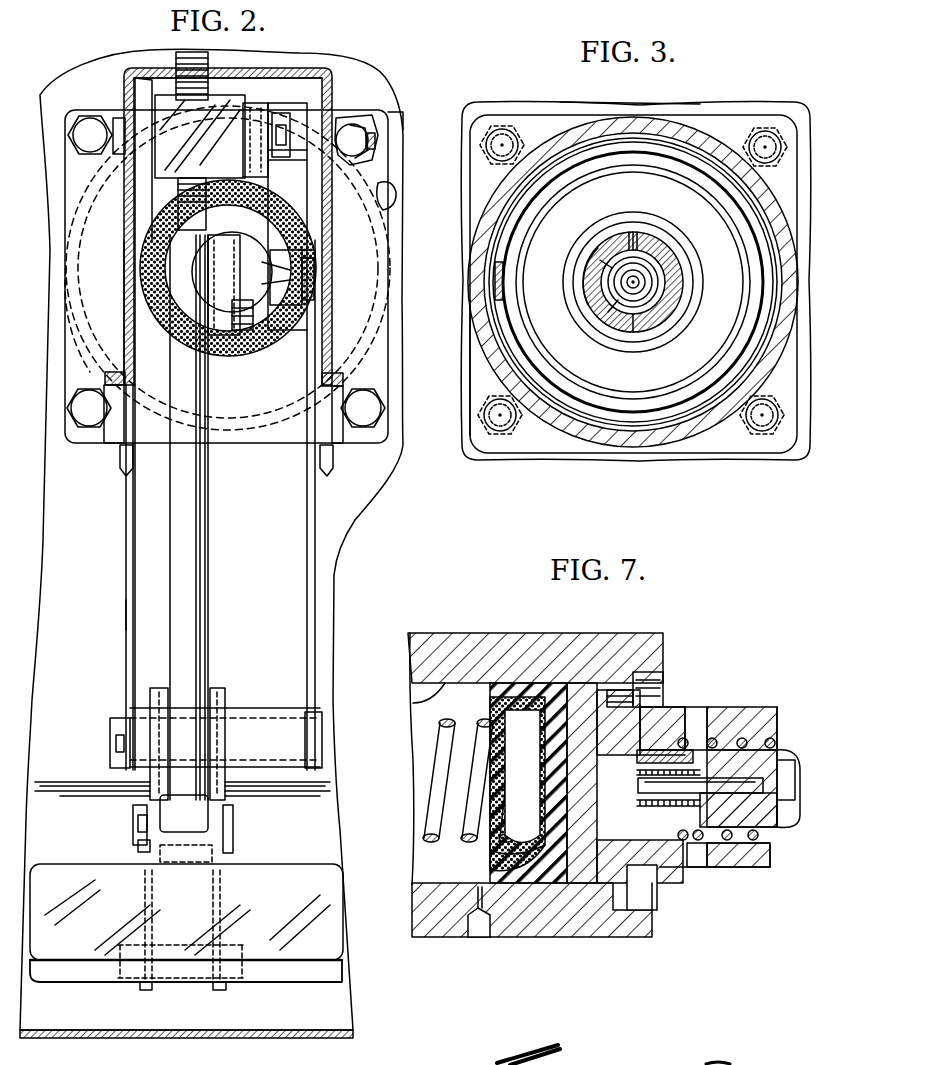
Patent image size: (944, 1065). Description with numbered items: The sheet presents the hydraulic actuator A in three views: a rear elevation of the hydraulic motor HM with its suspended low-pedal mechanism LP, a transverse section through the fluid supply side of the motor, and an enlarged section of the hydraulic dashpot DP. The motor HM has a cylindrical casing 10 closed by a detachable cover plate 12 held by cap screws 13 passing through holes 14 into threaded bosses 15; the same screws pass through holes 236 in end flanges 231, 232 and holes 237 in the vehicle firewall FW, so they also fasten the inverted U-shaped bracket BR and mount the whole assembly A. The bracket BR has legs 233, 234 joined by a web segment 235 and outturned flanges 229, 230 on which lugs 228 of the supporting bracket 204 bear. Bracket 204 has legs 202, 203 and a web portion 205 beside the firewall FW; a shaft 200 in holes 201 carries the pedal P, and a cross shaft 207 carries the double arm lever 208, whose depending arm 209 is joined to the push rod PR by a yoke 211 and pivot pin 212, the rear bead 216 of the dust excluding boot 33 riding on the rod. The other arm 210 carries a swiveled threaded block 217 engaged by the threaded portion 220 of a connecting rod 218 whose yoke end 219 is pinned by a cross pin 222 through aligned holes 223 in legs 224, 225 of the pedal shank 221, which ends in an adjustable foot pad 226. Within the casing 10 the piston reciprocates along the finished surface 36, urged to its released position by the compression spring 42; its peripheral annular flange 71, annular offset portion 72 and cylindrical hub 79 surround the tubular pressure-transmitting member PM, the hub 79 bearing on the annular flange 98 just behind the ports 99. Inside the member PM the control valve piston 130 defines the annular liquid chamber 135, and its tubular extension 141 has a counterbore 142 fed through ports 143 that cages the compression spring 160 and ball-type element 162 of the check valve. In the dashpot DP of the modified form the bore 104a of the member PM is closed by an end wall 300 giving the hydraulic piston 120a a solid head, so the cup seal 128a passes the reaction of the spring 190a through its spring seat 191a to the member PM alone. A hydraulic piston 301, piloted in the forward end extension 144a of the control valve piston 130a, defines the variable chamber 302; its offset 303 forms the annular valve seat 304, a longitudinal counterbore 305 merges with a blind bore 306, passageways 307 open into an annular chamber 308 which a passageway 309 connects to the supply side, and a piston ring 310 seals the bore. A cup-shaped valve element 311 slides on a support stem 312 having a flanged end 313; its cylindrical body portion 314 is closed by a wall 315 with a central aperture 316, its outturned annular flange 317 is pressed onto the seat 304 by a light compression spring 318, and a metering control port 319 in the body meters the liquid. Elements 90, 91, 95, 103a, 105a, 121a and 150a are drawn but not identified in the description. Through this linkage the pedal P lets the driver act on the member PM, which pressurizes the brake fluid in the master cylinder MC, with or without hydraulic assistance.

In FIG. 2, the cylindrical casing 10 is at (384, 220).
In FIG. 3, the cylindrical casing 10 is at (710, 137).
In FIG. 2, the detachable cover plate 12 is at (397, 197).
In FIG. 2, the cap screws 13 is at (90, 127).
In FIG. 3, the cap screws 13 is at (478, 163).
In FIG. 3, the holes 14 is at (490, 142).
In FIG. 2, the threaded bosses 15 is at (72, 440).
In FIG. 3, the threaded bosses 15 is at (488, 118).
In FIG. 2, the dust excluding boot 33 is at (163, 330).
In FIG. 3, the finished surface 36 is at (490, 347).
In FIG. 3, the compression spring 42 is at (495, 280).
In FIG. 3, the peripheral annular flange 71 is at (583, 145).
In FIG. 3, the annular offset portion 72 is at (697, 375).
In FIG. 3, the cylindrical hub 79 is at (658, 222).
In FIG. 7, the mounting block 90 is at (483, 633).
In FIG. 7, the recess 91 is at (414, 703).
In FIG. 7, the pin 95 is at (478, 938).
In FIG. 3, the annular flange 98 is at (655, 275).
In FIG. 3, the ports 99 is at (632, 232).
In FIG. 7, the body 103a is at (738, 810).
In FIG. 7, the bore 104a is at (650, 740).
In FIG. 7, the pad 105a is at (697, 763).
In FIG. 7, the hydraulic piston 120a is at (768, 870).
In FIG. 7, the base plate 121a is at (423, 868).
In FIG. 7, the cup seal 128a is at (527, 687).
In FIG. 3, the control valve piston 130 is at (646, 282).
In FIG. 7, the control valve piston 130a is at (788, 837).
In FIG. 3, the annular liquid chamber 135 is at (600, 278).
In FIG. 3, the tubular extension 141 is at (648, 290).
In FIG. 3, the counterbore 142 is at (662, 265).
In FIG. 3, the ports 143 is at (620, 320).
In FIG. 7, the forward end extension 144a is at (658, 830).
In FIG. 7, the cover 150a is at (770, 707).
In FIG. 3, the compression spring 160 is at (620, 293).
In FIG. 3, the ball-type element 162 is at (623, 313).
In FIG. 7, the spring 190a is at (440, 725).
In FIG. 7, the spring seat 191a is at (503, 846).
In FIG. 2, the shaft 200 is at (112, 723).
In FIG. 2, the holes 201 is at (128, 713).
In FIG. 2, the leg 202 is at (126, 565).
In FIG. 2, the leg 203 is at (307, 555).
In FIG. 2, the supporting bracket 204 is at (117, 613).
In FIG. 2, the web portion 205 is at (148, 512).
In FIG. 2, the cross shaft 207 is at (290, 113).
In FIG. 2, the double arm lever 208 is at (253, 208).
In FIG. 2, the depending arm 209 is at (253, 240).
In FIG. 2, the arm 210 is at (257, 110).
In FIG. 2, the yoke 211 is at (230, 335).
In FIG. 2, the pivot pin 212 is at (303, 290).
In FIG. 2, the rear bead 216 is at (247, 338).
In FIG. 2, the swiveled threaded block 217 is at (163, 173).
In FIG. 2, the connecting rod 218 is at (200, 528).
In FIG. 2, the yoke end 219 is at (196, 822).
In FIG. 2, the threaded portion 220 is at (208, 90).
In FIG. 2, the pedal shank 221 is at (210, 690).
In FIG. 2, the cross pin 222 is at (137, 822).
In FIG. 2, the aligned holes 223 is at (138, 797).
In FIG. 2, the leg 224 is at (140, 850).
In FIG. 2, the leg 225 is at (223, 857).
In FIG. 2, the foot pad 226 is at (80, 950).
In FIG. 2, the lug 228 is at (120, 460).
In FIG. 2, the outturned flange 229 is at (117, 372).
In FIG. 2, the outturned flange 230 is at (329, 373).
In FIG. 2, the end flange 231 is at (87, 113).
In FIG. 2, the end flange 232 is at (392, 117).
In FIG. 2, the leg 233 is at (124, 265).
In FIG. 2, the leg 234 is at (312, 254).
In FIG. 2, the web segment 235 is at (307, 66).
In FIG. 2, the holes 236 is at (368, 137).
In FIG. 2, the holes 237 is at (377, 147).
In FIG. 7, the end wall 300 is at (583, 753).
In FIG. 7, the hydraulic piston 301 is at (772, 867).
In FIG. 7, the variable chamber 302 is at (603, 753).
In FIG. 7, the offset 303 is at (643, 747).
In FIG. 7, the annular valve seat 304 is at (643, 887).
In FIG. 7, the longitudinal counterbore 305 is at (775, 717).
In FIG. 7, the blind bore 306 is at (793, 750).
In FIG. 7, the passageways 307 is at (715, 767).
In FIG. 7, the annular chamber 308 is at (717, 775).
In FIG. 7, the passageway 309 is at (700, 850).
In FIG. 7, the piston ring 310 is at (667, 830).
In FIG. 7, the cup-shaped valve element 311 is at (631, 778).
In FIG. 7, the support stem 312 is at (780, 730).
In FIG. 7, the flanged end 313 is at (637, 790).
In FIG. 7, the cylindrical body portion 314 is at (690, 867).
In FIG. 7, the wall 315 is at (740, 867).
In FIG. 7, the central aperture 316 is at (680, 788).
In FIG. 7, the outturned annular flange 317 is at (637, 760).
In FIG. 7, the light compression spring 318 is at (647, 753).
In FIG. 7, the metering control port 319 is at (652, 763).
In FIG. 3, the hydraulic actuator A is at (640, 94).
In FIG. 2, the bracket BR is at (333, 72).
In FIG. 7, the hydraulic dashpot DP is at (629, 830).
In FIG. 2, the vehicle firewall FW is at (147, 50).
In FIG. 3, the vehicle firewall FW is at (711, 92).
In FIG. 2, the hydraulic motor HM is at (278, 440).
In FIG. 3, the hydraulic motor HM is at (699, 443).
In FIG. 2, the suspended low-pedal mechanism LP is at (219, 630).
In FIG. 7, the master cylinder MC is at (438, 623).
In FIG. 2, the pedal P is at (67, 845).
In FIG. 3, the tubular pressure-transmitting member PM is at (667, 237).
In FIG. 7, the tubular pressure-transmitting member PM is at (767, 698).
In FIG. 2, the push rod PR is at (298, 278).